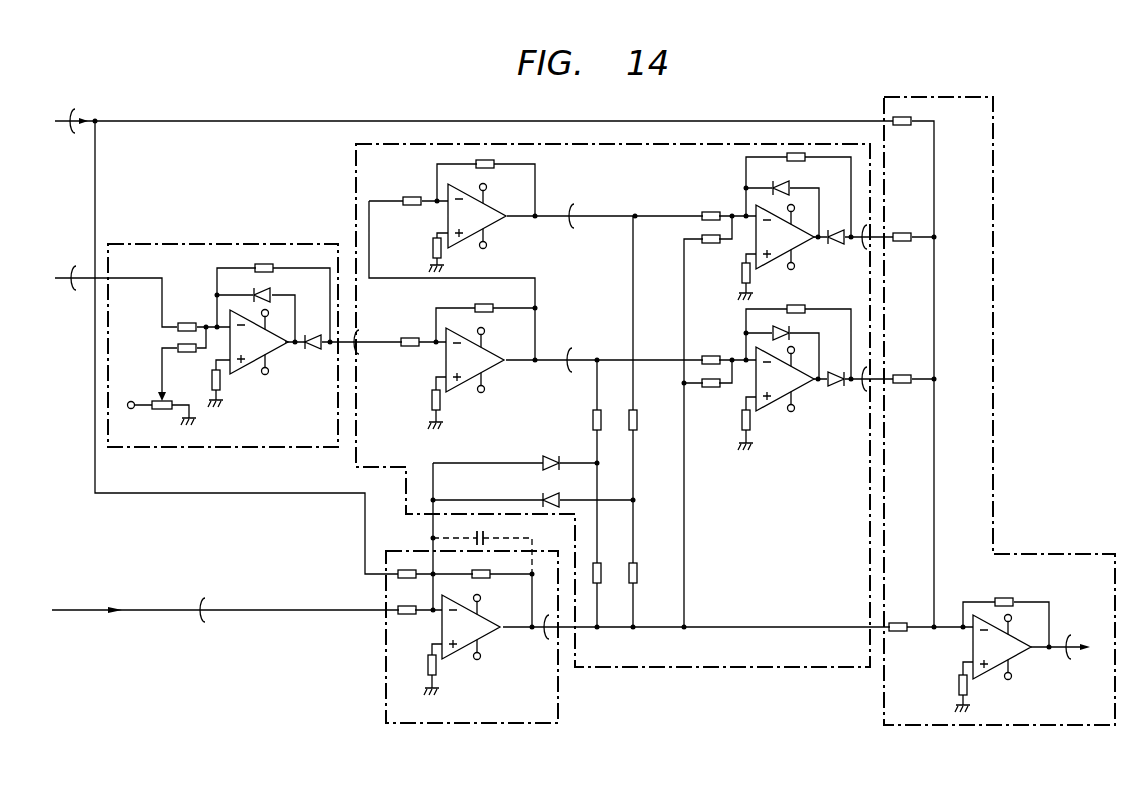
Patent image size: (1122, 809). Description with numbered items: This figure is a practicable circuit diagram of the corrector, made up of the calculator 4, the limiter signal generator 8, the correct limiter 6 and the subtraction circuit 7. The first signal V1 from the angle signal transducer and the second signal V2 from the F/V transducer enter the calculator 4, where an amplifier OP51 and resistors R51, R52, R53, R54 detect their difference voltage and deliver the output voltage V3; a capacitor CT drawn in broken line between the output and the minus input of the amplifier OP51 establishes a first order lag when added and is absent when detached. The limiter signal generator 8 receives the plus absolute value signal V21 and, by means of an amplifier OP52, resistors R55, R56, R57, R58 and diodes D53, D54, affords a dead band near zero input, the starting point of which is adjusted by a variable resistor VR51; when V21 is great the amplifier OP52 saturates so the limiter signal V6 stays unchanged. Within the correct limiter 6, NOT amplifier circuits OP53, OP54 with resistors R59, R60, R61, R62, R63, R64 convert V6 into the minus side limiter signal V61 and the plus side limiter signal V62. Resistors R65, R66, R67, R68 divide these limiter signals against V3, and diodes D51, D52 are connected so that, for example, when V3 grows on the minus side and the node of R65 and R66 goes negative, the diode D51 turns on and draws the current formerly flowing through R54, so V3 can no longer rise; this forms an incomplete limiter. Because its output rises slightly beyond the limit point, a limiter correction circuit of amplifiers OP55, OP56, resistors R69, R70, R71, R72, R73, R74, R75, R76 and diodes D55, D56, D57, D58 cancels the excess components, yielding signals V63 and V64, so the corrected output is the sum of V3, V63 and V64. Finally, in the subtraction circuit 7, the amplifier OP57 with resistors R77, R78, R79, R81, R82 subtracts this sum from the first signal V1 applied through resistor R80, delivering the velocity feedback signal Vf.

The calculator 4 is at (410, 723).
The correct limiter 6 is at (633, 667).
The subtraction circuit 7 is at (995, 181).
The limiter signal generator 8 is at (193, 244).
The amplifier OP51 is at (471, 637).
The amplifier OP52 is at (259, 352).
The NOT amplifier circuit OP53 is at (476, 369).
The NOT amplifier circuit OP54 is at (480, 221).
The amplifier OP55 is at (786, 241).
The amplifier OP56 is at (785, 387).
The amplifier OP57 is at (1002, 656).
The resistor R51 is at (408, 566).
The resistor R52 is at (407, 603).
The resistor R53 is at (419, 665).
The resistor R54 is at (481, 566).
The resistor R55 is at (188, 319).
The resistor R56 is at (188, 358).
The resistor R57 is at (201, 383).
The resistor R58 is at (265, 261).
The resistor R59 is at (410, 334).
The resistor R60 is at (422, 400).
The resistor R61 is at (484, 300).
The resistor R62 is at (413, 194).
The resistor R63 is at (423, 249).
The resistor R64 is at (486, 157).
The resistor R65 is at (583, 420).
The resistor R66 is at (608, 567).
The resistor R67 is at (645, 420).
The resistor R68 is at (643, 567).
The resistor R69 is at (711, 208).
The resistor R70 is at (709, 250).
The resistor R71 is at (709, 353).
The resistor R72 is at (709, 394).
The resistor R73 is at (733, 273).
The resistor R74 is at (731, 420).
The resistor R75 is at (808, 166).
The resistor R76 is at (794, 299).
The resistor R77 is at (899, 620).
The resistor R78 is at (903, 372).
The resistor R79 is at (904, 229).
The resistor R80 is at (904, 114).
The resistor R81 is at (948, 685).
The resistor R82 is at (1004, 594).
The variable resistor VR51 is at (141, 409).
The capacitor CT is at (491, 533).
The diode D51 is at (551, 453).
The diode D52 is at (551, 491).
The diode D53 is at (309, 354).
The diode D54 is at (276, 290).
The diode D55 is at (773, 180).
The diode D56 is at (836, 247).
The diode D57 is at (798, 329).
The diode D58 is at (833, 390).
The first signal V1 is at (75, 133).
The second signal V2 is at (205, 598).
The output signal V21 is at (76, 290).
The output voltage V3 is at (549, 639).
The limiter signal V6 is at (359, 330).
The minus side limiter signal V61 is at (572, 348).
The plus side limiter signal V62 is at (574, 204).
The correction signal V63 is at (867, 225).
The correction signal V64 is at (867, 367).
The velocity feedback signal Vf is at (1064, 631).